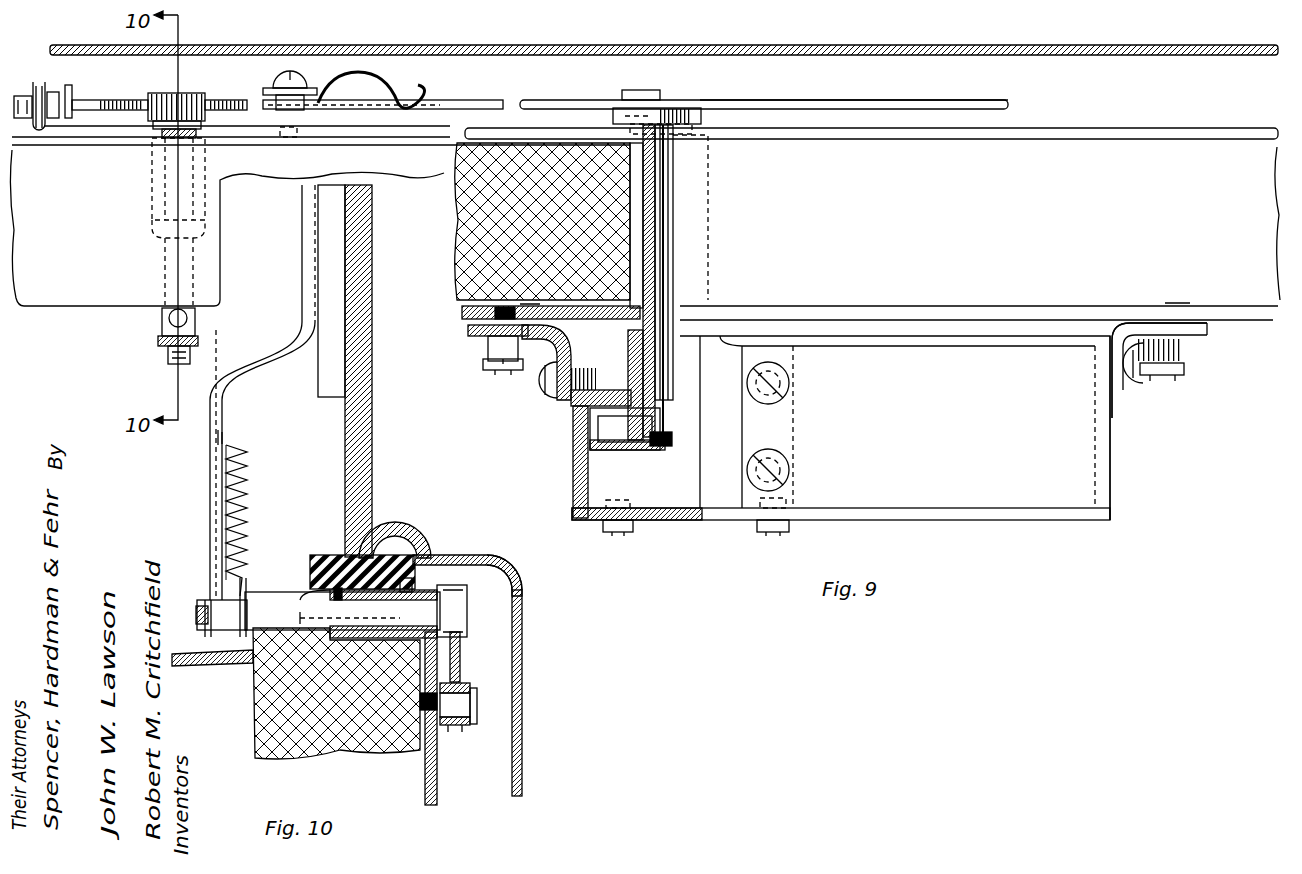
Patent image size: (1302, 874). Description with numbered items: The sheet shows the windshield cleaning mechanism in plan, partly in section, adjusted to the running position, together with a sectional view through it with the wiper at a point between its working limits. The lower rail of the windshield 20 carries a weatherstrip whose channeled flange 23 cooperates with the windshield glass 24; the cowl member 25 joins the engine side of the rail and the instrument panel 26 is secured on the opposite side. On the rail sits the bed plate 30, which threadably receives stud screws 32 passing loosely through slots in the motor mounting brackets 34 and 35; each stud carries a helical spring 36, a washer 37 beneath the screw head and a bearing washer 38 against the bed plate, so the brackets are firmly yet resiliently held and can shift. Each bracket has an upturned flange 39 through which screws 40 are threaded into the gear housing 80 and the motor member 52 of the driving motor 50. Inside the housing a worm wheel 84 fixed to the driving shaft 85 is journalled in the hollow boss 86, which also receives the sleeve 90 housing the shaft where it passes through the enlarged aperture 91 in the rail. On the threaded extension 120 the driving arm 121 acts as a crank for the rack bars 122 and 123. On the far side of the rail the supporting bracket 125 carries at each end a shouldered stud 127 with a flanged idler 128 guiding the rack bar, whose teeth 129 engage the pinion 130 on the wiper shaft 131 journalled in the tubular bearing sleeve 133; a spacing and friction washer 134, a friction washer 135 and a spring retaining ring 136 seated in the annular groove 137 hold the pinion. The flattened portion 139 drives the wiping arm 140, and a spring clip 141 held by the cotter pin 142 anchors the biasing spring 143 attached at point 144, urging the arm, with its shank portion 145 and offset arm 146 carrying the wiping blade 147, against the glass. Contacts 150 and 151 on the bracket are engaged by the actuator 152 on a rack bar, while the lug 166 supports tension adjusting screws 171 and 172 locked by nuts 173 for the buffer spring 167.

In FIG. 9, the lower rail of the windshield 20 is at (458, 195).
In FIG. 10, the lower rail of the windshield 20 is at (403, 748).
In FIG. 10, the channeled flange 23 is at (392, 524).
In FIG. 10, the windshield glass 24 is at (372, 275).
In FIG. 10, the cowl member 25 is at (232, 666).
In FIG. 9, the instrument panel 26 is at (305, 45).
In FIG. 10, the instrument panel 26 is at (522, 714).
In FIG. 9, the bed plate 30 is at (468, 318).
In FIG. 9, the stud screw 32 is at (495, 368).
In FIG. 9, the motor mounting bracket 34 is at (628, 303).
In FIG. 9, the motor mounting bracket 35 is at (1205, 322).
In FIG. 9, the helical spring 36 is at (487, 357).
In FIG. 9, the washer 37 is at (480, 336).
In FIG. 9, the bearing washer 38 is at (545, 298).
In FIG. 9, the upturned flange 39 is at (560, 402).
In FIG. 9, the screw 40 is at (545, 390).
In FIG. 9, the driving motor 50 is at (843, 500).
In FIG. 9, the motor member 52 is at (1111, 452).
In FIG. 9, the gear housing 80 is at (573, 471).
In FIG. 9, the worm wheel 84 is at (634, 452).
In FIG. 9, the driving shaft 85 is at (668, 375).
In FIG. 9, the hollow boss 86 is at (628, 347).
In FIG. 9, the sleeve 90 is at (665, 238).
In FIG. 9, the aperture 91 is at (655, 210).
In FIG. 9, the threaded extension 120 is at (764, 249).
In FIG. 9, the driving arm 121 is at (704, 117).
In FIG. 9, the rack bar 122 is at (583, 92).
In FIG. 10, the rack bar 122 is at (460, 660).
In FIG. 9, the rack bar 123 is at (810, 100).
In FIG. 9, the supporting bracket 125 is at (138, 137).
In FIG. 10, the supporting bracket 125 is at (437, 786).
In FIG. 10, the shouldered stud 127 is at (478, 708).
In FIG. 10, the flanged idler 128 is at (472, 680).
In FIG. 9, the teeth 129 is at (133, 99).
In FIG. 9, the pinion 130 is at (200, 96).
In FIG. 10, the pinion 130 is at (498, 562).
In FIG. 9, the wiper shaft 131 is at (163, 285).
In FIG. 10, the wiper shaft 131 is at (468, 616).
In FIG. 9, the tubular bearing sleeve 133 is at (150, 193).
In FIG. 10, the tubular bearing sleeve 133 is at (430, 585).
In FIG. 10, the spacing and friction washer 134 is at (462, 555).
In FIG. 9, the friction washer 135 is at (150, 222).
In FIG. 10, the friction washer 135 is at (325, 548).
In FIG. 10, the spring retaining ring 136 is at (336, 600).
In FIG. 10, the annular groove 137 is at (312, 616).
In FIG. 9, the flattened portion 139 is at (198, 341).
In FIG. 10, the flattened portion 139 is at (222, 632).
In FIG. 9, the wiping arm 140 is at (160, 329).
In FIG. 10, the wiping arm 140 is at (210, 548).
In FIG. 9, the spring clip 141 is at (190, 318).
In FIG. 10, the spring clip 141 is at (258, 592).
In FIG. 9, the cotter pin 142 is at (166, 355).
In FIG. 10, the cotter pin 142 is at (196, 613).
In FIG. 10, the biasing spring 143 is at (246, 507).
In FIG. 10, the spring attachment point 144 is at (218, 434).
In FIG. 10, the shank portion 145 is at (210, 483).
In FIG. 10, the offset arm 146 is at (301, 210).
In FIG. 10, the wiping blade 147 is at (318, 381).
In FIG. 9, the contact 150 is at (367, 77).
In FIG. 9, the contact 151 is at (408, 110).
In FIG. 9, the actuator 152 is at (460, 99).
In FIG. 9, the upstanding lug 166 is at (33, 95).
In FIG. 9, the buffer spring 167 is at (72, 95).
In FIG. 9, the tension adjusting screw 171 is at (53, 88).
In FIG. 9, the tension adjusting screw 172 is at (55, 126).
In FIG. 9, the nut 173 is at (30, 122).